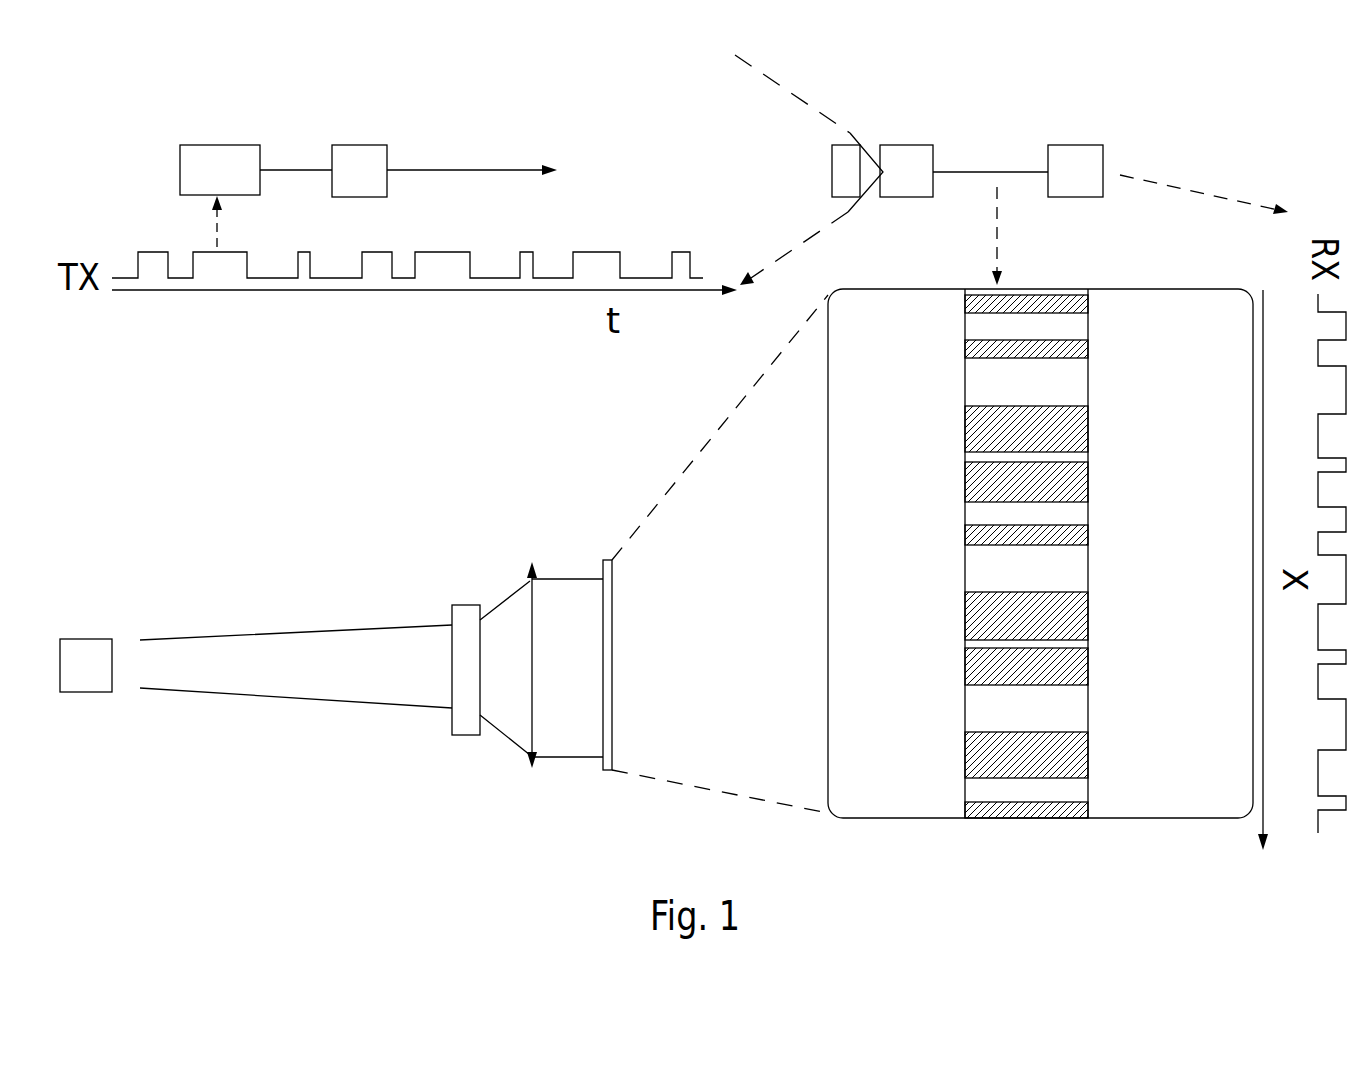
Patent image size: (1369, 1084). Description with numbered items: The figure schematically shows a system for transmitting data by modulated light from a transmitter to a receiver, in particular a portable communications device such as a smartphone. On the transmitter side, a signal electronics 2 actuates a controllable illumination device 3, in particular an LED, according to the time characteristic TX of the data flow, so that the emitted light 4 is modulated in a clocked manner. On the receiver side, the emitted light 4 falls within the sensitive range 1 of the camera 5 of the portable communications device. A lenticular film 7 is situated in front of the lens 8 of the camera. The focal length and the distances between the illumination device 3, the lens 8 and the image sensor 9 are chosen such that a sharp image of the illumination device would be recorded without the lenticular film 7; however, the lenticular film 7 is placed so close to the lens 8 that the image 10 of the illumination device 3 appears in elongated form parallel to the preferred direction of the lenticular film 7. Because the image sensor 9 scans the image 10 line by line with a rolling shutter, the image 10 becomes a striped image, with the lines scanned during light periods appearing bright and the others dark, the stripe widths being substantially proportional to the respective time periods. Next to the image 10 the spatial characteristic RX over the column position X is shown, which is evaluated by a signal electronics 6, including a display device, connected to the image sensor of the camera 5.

The sensitive range of camera 1 is at (809, 170).
The signal electronics 2 is at (231, 189).
The controllable illumination device 3 is at (371, 190).
The emitted light 4 is at (348, 413).
The camera 5 is at (918, 190).
The signal electronics including display device 6 is at (1087, 190).
The lenticular film 7 is at (857, 190).
The lens 8 is at (561, 639).
The image sensor 9 is at (622, 665).
The image 10 is at (868, 336).